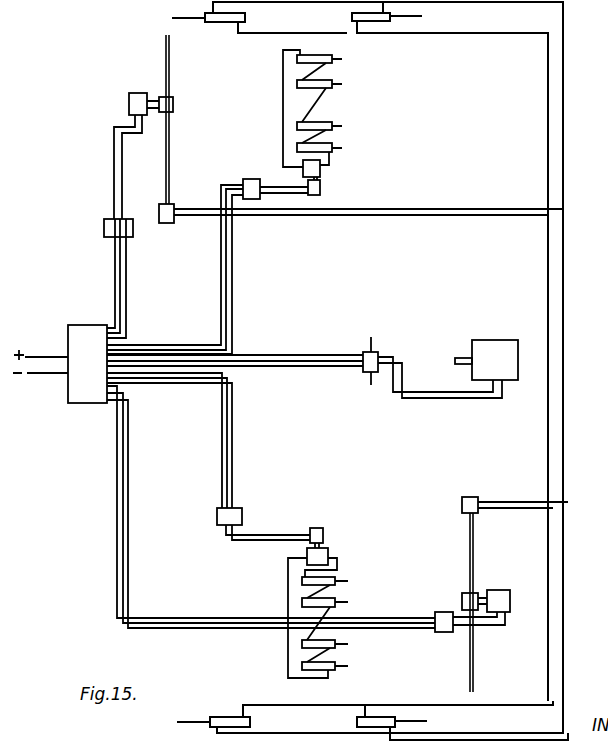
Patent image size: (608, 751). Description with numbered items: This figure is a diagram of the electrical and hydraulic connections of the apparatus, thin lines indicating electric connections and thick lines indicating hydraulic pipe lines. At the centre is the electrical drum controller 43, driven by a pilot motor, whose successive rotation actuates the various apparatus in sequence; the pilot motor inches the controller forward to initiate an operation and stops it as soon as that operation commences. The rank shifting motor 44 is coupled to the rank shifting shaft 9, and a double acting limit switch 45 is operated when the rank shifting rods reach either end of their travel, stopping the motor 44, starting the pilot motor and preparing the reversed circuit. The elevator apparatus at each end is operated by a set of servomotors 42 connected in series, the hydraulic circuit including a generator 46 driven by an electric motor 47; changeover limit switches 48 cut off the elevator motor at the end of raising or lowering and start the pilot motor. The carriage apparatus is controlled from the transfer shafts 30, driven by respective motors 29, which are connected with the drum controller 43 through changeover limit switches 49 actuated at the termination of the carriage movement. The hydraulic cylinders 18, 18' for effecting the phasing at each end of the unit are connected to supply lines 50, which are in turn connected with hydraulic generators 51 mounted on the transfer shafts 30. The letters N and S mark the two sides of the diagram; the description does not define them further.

The hydraulic cylinder 18 is at (367, 367).
The hydraulic cylinder 18' is at (460, 371).
The transfer shaft 30 is at (169, 86).
The motor 29 is at (129, 106).
The servomotor 42 is at (348, 115).
The electrical drum controller 43 is at (90, 330).
The rank shifting motor 44 is at (507, 341).
The double acting limit switch 45 is at (378, 353).
The generator 46 is at (322, 173).
The electric motor 47 is at (322, 189).
The changeover limit switch 48 is at (251, 179).
The changeover limit switch 49 is at (133, 234).
The supply line 50 is at (548, 257).
The hydraulic generator 51 is at (170, 226).
The rank shifting shaft 9 is at (462, 358).
The neutral N is at (96, 274).
The supply S is at (583, 271).